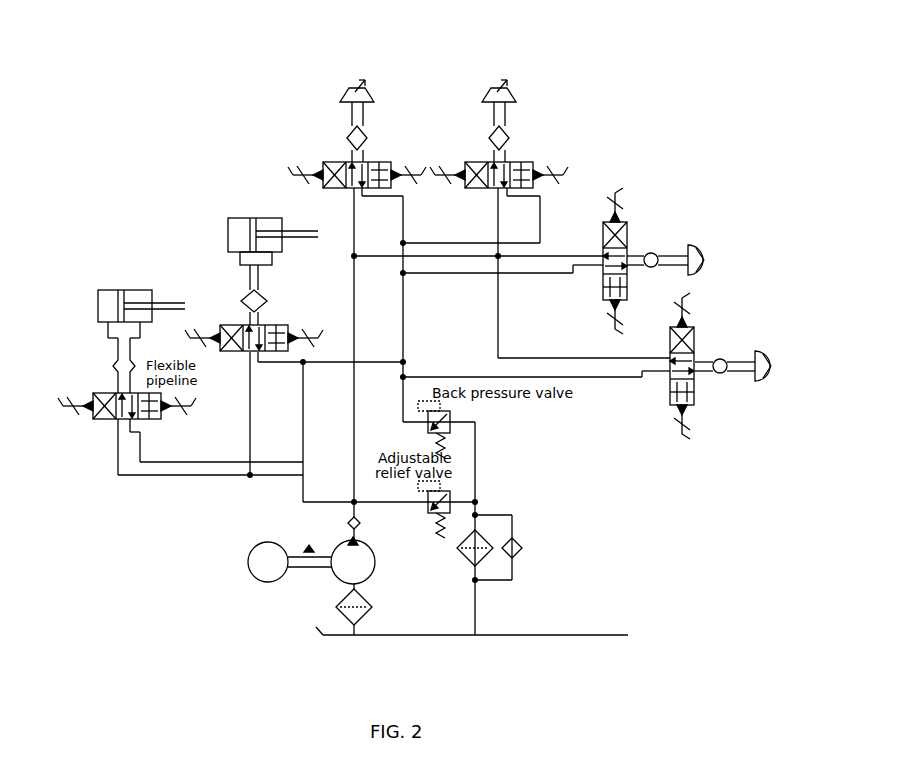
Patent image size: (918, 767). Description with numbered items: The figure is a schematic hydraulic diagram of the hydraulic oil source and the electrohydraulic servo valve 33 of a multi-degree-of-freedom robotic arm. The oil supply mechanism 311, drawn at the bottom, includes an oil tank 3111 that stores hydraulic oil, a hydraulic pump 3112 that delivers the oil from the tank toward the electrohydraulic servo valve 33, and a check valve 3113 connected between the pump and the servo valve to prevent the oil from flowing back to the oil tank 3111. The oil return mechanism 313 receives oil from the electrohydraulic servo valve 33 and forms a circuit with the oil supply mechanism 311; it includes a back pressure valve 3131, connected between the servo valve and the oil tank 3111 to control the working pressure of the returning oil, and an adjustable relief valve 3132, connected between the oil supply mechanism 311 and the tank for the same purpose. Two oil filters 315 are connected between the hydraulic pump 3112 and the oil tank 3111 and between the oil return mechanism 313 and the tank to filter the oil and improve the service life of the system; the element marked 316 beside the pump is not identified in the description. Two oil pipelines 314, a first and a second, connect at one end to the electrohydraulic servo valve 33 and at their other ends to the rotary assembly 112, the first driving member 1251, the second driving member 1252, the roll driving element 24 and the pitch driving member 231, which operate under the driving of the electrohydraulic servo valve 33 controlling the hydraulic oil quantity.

The roll driving element 24 is at (700, 268).
The electrohydraulic servo valve 33 is at (333, 172).
The rotary assembly 112 is at (352, 97).
The pitch driving member 231 is at (495, 97).
The second driving member 1252 is at (240, 232).
The first driving member 1251 is at (110, 306).
The oil pipeline 314 is at (116, 367).
The oil return mechanism 313 is at (505, 469).
The back pressure valve 3131 is at (446, 426).
The adjustable relief valve 3132 is at (446, 505).
The oil supply mechanism 311 is at (387, 596).
The check valve 3113 is at (350, 522).
The hydraulic pump 3112 is at (345, 565).
The oil tank 3111 is at (322, 638).
The filter 316 is at (362, 612).
The oil filter 315 is at (474, 560).